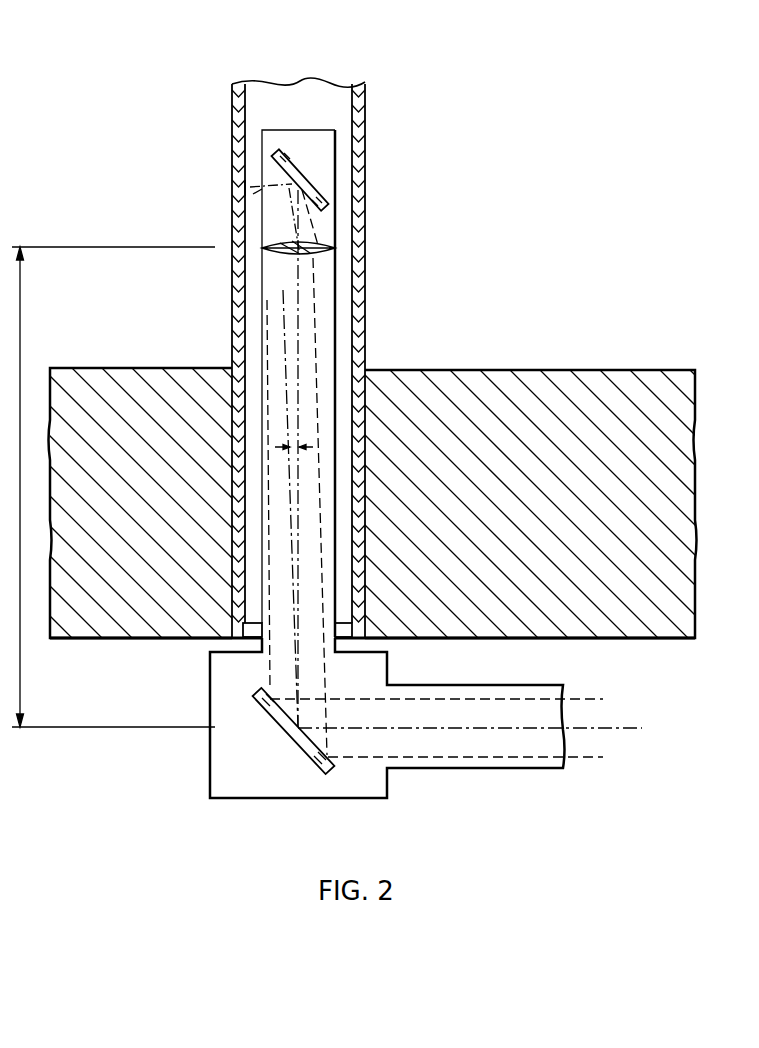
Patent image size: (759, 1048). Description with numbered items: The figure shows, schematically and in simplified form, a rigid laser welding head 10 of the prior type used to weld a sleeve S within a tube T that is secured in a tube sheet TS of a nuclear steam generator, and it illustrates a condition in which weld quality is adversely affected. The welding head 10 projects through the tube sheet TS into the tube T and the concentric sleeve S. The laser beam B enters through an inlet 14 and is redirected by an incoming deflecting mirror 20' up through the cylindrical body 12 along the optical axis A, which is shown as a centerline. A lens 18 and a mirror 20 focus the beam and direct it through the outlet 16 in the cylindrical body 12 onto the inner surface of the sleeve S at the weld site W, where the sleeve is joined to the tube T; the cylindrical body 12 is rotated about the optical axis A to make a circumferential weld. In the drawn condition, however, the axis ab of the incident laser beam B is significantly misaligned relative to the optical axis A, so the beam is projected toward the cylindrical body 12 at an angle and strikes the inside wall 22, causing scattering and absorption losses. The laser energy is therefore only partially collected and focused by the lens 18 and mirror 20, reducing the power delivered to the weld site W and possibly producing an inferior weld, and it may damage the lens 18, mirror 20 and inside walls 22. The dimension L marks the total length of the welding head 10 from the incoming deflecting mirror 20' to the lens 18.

The welding head 10 is at (311, 124).
The cylindrical body 12 is at (264, 130).
The inlet 14 is at (262, 645).
The outlet 16 is at (262, 196).
The lens 18 is at (336, 249).
The mirror 20 is at (340, 180).
The incoming deflecting mirror 20' is at (294, 732).
The inside wall 22 is at (270, 352).
The weld site W is at (252, 184).
The tube T is at (366, 300).
The sleeve S is at (360, 332).
The tube sheet TS is at (500, 370).
The optical axis A is at (322, 512).
The axis of the incident laser beam ab is at (468, 784).
The total length of the welding head L is at (111, 487).
The laser beam B is at (428, 757).